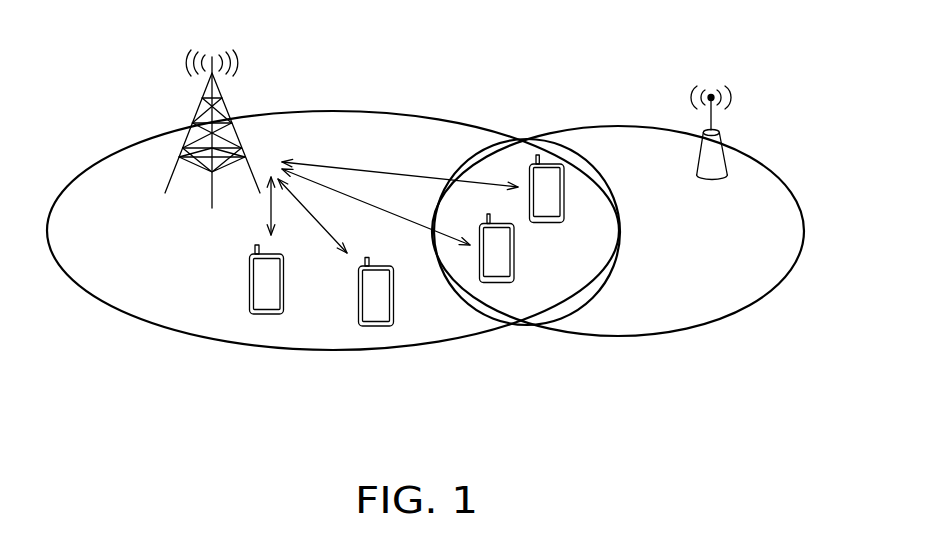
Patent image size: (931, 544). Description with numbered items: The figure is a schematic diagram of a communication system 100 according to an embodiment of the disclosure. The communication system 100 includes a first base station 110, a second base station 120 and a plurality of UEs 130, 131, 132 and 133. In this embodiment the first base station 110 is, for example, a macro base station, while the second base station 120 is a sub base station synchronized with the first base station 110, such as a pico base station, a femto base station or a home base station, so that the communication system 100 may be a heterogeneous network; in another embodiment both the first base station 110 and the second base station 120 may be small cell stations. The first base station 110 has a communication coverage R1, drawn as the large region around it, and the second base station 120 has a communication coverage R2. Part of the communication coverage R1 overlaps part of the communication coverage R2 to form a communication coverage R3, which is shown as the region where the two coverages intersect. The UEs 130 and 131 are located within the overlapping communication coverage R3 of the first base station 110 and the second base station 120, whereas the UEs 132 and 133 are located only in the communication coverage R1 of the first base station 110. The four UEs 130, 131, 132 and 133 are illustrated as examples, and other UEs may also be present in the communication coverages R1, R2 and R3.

The communication system 100 is at (800, 434).
The first base station 110 is at (200, 100).
The second base station 120 is at (699, 87).
The UE 130 is at (495, 272).
The UE 131 is at (553, 178).
The UE 132 is at (377, 317).
The UE 133 is at (267, 302).
The communication coverage R1 is at (139, 292).
The communication coverage R2 is at (702, 293).
The communication coverage R3 is at (530, 297).